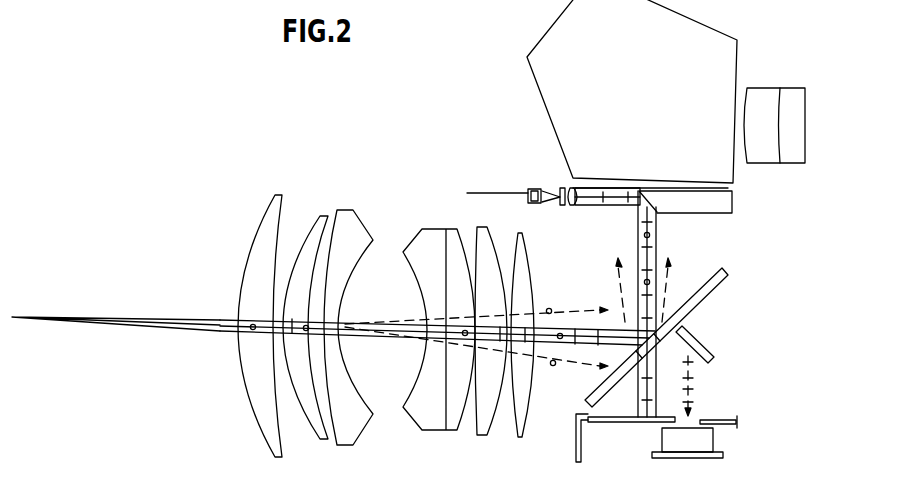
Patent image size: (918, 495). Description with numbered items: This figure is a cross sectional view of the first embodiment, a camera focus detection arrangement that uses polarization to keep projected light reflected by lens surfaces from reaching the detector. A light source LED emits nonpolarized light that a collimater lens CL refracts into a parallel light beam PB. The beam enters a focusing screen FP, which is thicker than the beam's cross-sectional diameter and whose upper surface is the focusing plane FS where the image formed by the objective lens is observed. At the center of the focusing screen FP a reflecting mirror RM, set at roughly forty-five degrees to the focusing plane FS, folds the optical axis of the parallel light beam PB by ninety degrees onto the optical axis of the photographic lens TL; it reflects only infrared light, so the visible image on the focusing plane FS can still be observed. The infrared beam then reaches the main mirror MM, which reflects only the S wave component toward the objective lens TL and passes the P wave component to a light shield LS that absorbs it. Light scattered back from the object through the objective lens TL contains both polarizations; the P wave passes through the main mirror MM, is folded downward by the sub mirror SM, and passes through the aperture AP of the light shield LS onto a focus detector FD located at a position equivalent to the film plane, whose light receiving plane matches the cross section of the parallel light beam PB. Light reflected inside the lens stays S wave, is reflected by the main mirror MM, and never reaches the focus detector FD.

The photographic lens TL is at (378, 203).
The light source LED is at (533, 189).
The collimater lens CL is at (572, 209).
The parallel light beam PB is at (608, 207).
The reflecting mirror RM is at (660, 196).
The focusing plane FS is at (720, 190).
The focusing screen FP is at (728, 207).
The sub mirror SM is at (703, 350).
The aperture AP is at (697, 420).
The light shield LS is at (607, 416).
The main mirror MM is at (583, 398).
The focus detector FD is at (707, 438).